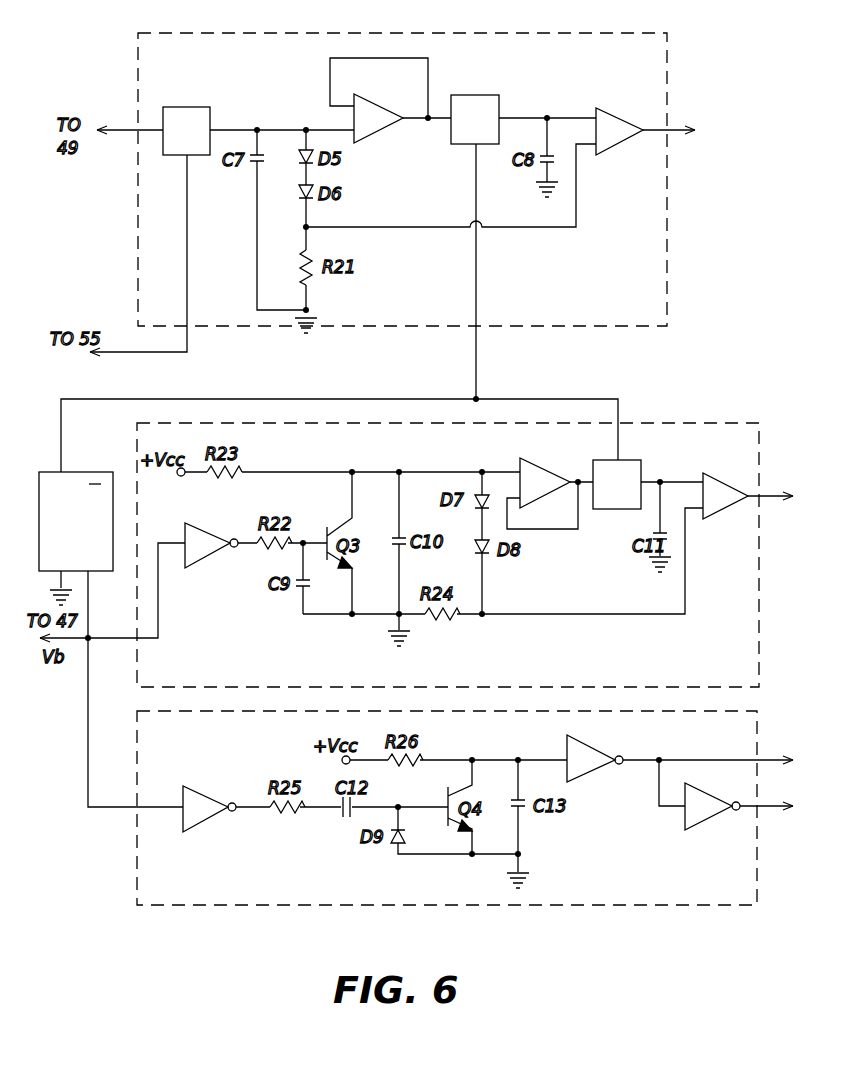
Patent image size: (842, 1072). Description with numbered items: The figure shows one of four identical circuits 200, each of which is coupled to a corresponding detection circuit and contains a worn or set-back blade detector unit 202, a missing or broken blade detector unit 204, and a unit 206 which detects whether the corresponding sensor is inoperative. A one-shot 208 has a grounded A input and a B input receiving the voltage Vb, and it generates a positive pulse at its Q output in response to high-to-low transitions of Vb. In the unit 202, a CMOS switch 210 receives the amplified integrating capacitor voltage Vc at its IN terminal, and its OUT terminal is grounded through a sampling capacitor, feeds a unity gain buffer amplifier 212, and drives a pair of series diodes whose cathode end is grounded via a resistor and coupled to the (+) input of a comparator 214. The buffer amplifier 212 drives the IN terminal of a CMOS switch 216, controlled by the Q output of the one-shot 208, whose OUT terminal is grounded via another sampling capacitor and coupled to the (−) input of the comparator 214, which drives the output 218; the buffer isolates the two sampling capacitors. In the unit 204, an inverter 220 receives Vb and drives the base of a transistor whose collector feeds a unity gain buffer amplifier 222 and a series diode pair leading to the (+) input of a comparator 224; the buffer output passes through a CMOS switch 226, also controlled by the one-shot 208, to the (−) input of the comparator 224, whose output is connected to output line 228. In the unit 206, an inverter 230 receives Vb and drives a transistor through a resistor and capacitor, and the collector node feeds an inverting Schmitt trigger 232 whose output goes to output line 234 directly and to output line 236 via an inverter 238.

The circuit 200 is at (105, 935).
The worn or set-back blade detector unit 202 is at (583, 33).
The missing or broken blade detector unit 204 is at (448, 542).
The inoperative sensor detector unit 206 is at (656, 915).
The one-shot 208 is at (79, 472).
The CMOS switch 210 is at (191, 107).
The unity gain buffer amplifier 212 is at (372, 107).
The comparator 214 is at (610, 150).
The CMOS switch 216 is at (478, 91).
The output line 218 is at (678, 130).
The inverter 220 is at (191, 523).
The unity gain buffer amplifier 222 is at (524, 505).
The comparator 224 is at (723, 522).
The CMOS switch 226 is at (630, 512).
The output line 228 is at (770, 498).
The inverter 230 is at (201, 787).
The inverting Schmitt trigger 232 is at (583, 739).
The output line 234 is at (770, 759).
The output line 236 is at (769, 806).
The inverter 238 is at (693, 828).